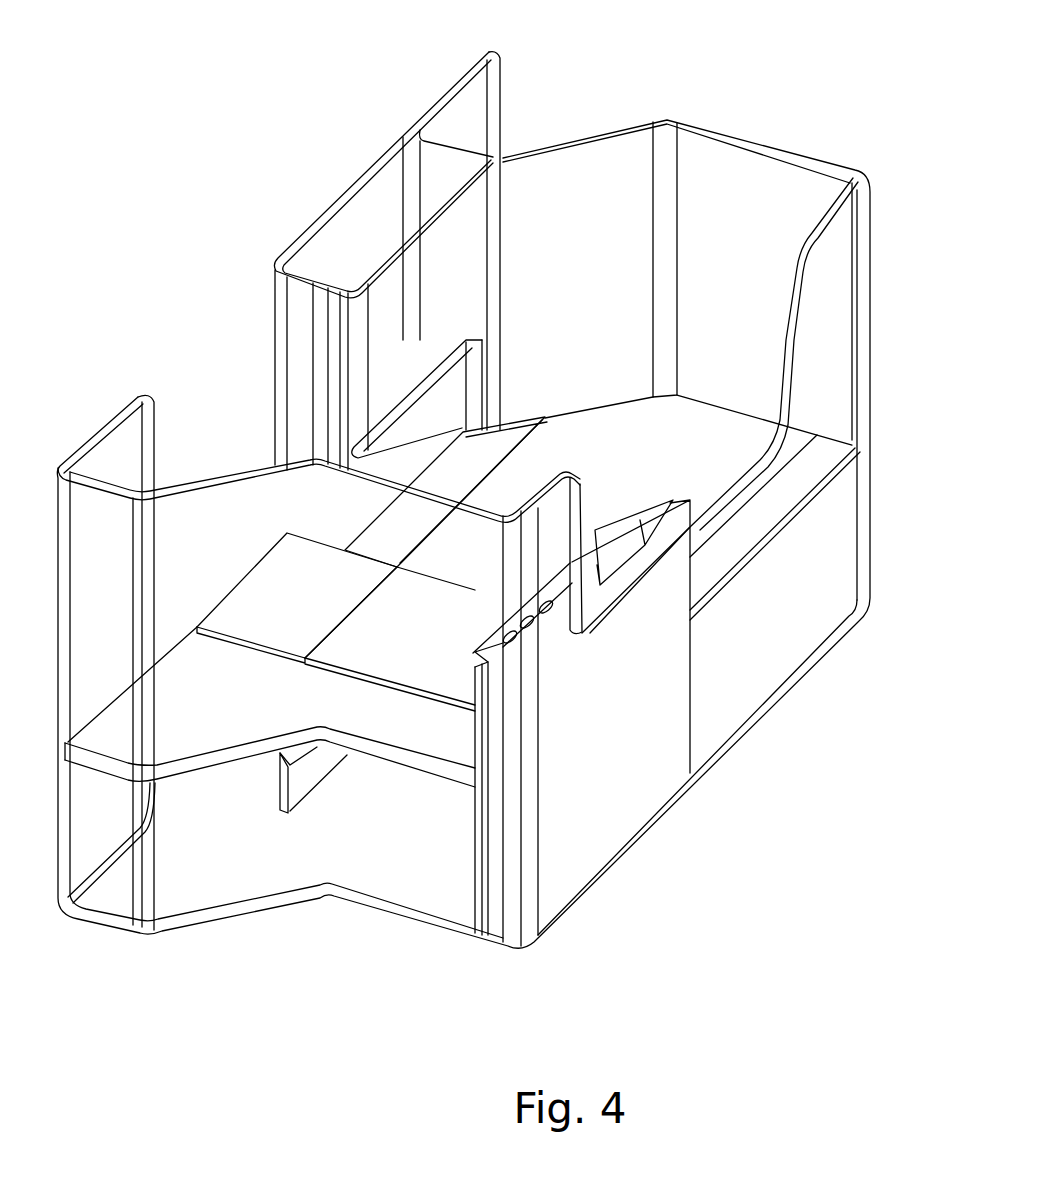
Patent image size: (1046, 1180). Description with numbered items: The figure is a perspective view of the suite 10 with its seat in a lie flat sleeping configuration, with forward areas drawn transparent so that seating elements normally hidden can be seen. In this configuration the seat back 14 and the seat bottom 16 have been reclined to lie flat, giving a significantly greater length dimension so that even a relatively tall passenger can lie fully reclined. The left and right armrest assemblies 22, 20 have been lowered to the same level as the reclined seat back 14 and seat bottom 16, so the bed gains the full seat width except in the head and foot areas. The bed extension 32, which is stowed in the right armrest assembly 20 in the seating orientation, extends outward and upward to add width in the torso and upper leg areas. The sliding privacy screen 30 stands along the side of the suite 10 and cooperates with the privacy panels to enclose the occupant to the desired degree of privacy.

The suite 10 is at (222, 103).
The seat back 14 is at (707, 430).
The seat bottom 16 is at (432, 648).
The right armrest assembly 20 is at (497, 433).
The left armrest assembly 22 is at (817, 457).
The sliding privacy screen 30 is at (377, 150).
The bed extension 32 is at (285, 593).